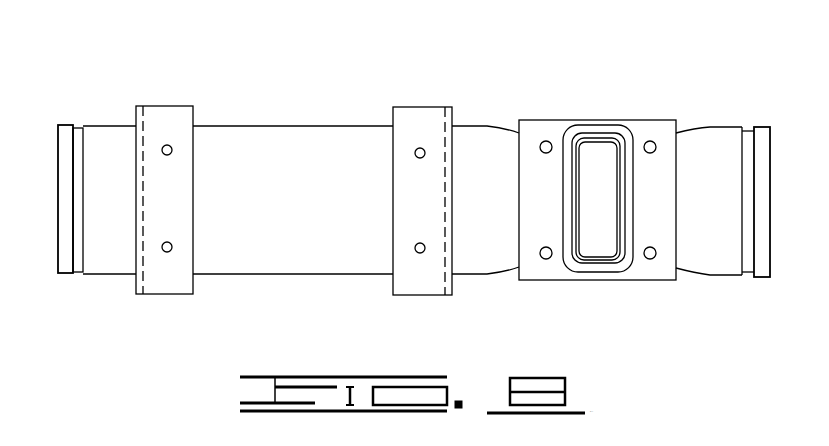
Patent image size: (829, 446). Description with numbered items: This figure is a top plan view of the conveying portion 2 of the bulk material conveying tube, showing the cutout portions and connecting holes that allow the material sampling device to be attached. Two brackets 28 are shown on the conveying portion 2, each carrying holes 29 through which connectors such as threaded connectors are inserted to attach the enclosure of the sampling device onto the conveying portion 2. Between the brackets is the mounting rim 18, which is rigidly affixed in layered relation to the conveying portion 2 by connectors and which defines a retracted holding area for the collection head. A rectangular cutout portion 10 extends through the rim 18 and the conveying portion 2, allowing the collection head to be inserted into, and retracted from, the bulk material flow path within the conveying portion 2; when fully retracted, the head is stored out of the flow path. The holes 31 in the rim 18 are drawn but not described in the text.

The conveying portion 2 is at (247, 125).
The brackets 28 is at (149, 103).
The holes 29 is at (170, 145).
The mounting rim 18 is at (637, 120).
The rectangular cutout portion 10 is at (582, 158).
The mounting holes 31 is at (543, 140).